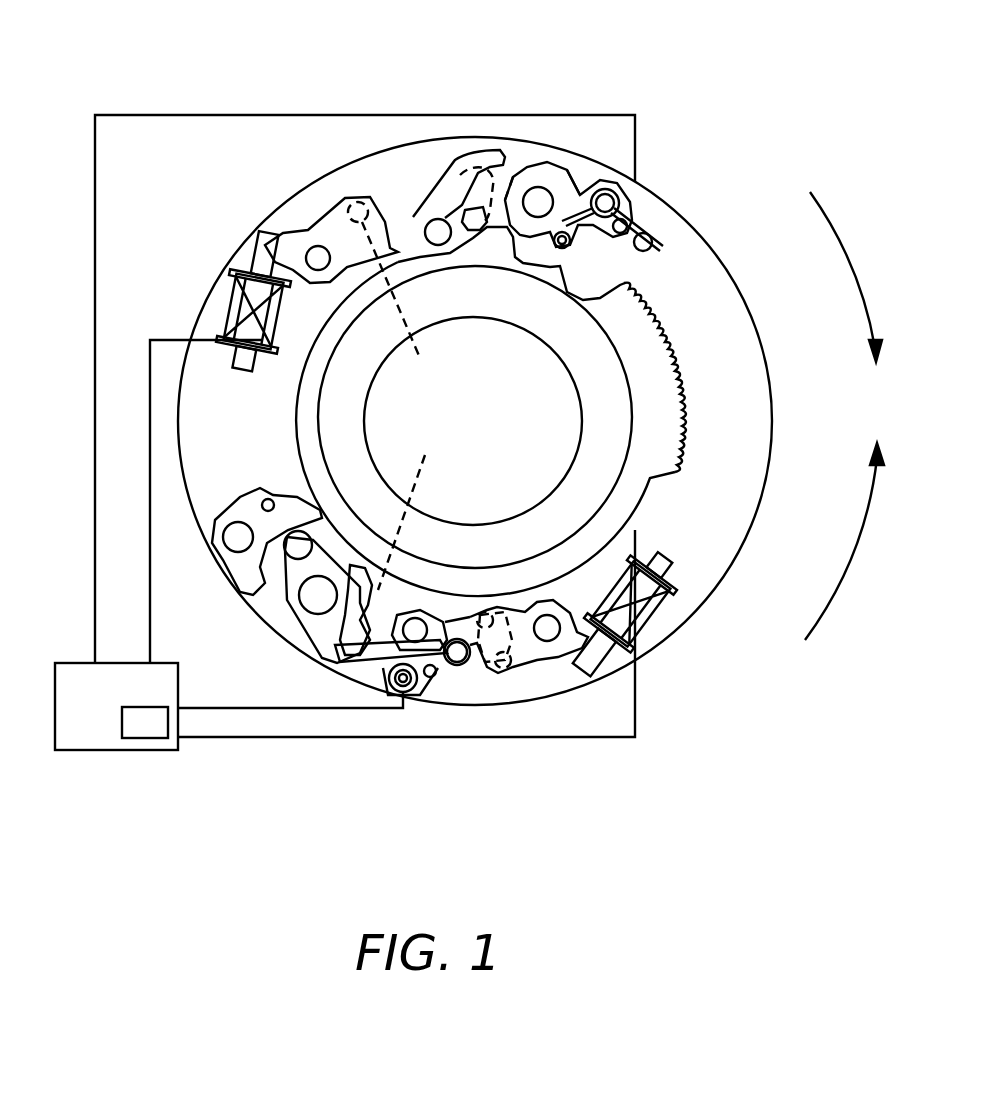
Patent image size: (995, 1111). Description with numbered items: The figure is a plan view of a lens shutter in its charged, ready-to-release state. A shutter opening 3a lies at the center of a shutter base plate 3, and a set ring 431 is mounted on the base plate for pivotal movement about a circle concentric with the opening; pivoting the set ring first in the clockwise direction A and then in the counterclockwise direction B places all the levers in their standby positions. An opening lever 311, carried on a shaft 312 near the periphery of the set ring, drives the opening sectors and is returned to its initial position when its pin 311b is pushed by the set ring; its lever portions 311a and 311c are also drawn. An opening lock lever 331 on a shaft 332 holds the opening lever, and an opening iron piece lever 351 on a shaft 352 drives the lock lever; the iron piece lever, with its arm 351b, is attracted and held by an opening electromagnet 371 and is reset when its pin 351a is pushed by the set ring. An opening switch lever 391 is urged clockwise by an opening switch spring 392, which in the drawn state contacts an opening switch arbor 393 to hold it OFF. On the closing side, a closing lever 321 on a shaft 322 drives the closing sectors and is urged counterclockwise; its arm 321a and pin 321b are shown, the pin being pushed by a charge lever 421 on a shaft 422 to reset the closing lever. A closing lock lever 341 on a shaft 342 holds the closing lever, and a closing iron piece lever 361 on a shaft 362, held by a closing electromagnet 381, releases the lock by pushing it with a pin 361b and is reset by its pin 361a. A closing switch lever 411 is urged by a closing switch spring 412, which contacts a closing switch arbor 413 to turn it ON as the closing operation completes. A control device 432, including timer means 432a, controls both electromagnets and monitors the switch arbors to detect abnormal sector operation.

The shutter base plate 3 is at (766, 378).
The shutter opening 3a is at (583, 416).
The opening lever 311 is at (570, 175).
The hidden portion of first lever 311a is at (518, 170).
The pin 311b is at (568, 246).
The cam surface of first lever 311c is at (575, 180).
The shaft 312 is at (552, 185).
The closing lever 321 is at (313, 630).
The arm of second lever 321a is at (419, 504).
The pin 321b is at (300, 533).
The shaft 322 is at (310, 593).
The opening lock lever 331 is at (422, 220).
The shaft 332 is at (438, 218).
The closing lock lever 341 is at (372, 660).
The shaft 342 is at (417, 616).
The opening iron piece lever 351 is at (313, 252).
The pin 351a is at (356, 200).
The arm of fourth lever 351b is at (413, 309).
The shaft 352 is at (327, 235).
The closing iron piece lever 361 is at (555, 650).
The pin 361a is at (505, 600).
The pin 361b is at (505, 668).
The shaft 362 is at (548, 615).
The opening electromagnet 371 is at (247, 300).
The closing electromagnet 381 is at (642, 597).
The opening switch lever 391 is at (620, 196).
The opening switch spring 392 is at (640, 228).
The opening switch arbor 393 is at (655, 253).
The closing switch lever 411 is at (355, 665).
The closing switch spring 412 is at (455, 668).
The closing switch arbor 413 is at (405, 698).
The charge lever 421 is at (232, 562).
The shaft 422 is at (233, 533).
The set ring 431 is at (660, 440).
The control device 432 is at (85, 752).
The timer means 432a is at (155, 732).
The clockwise direction A is at (858, 277).
The counterclockwise direction B is at (856, 541).